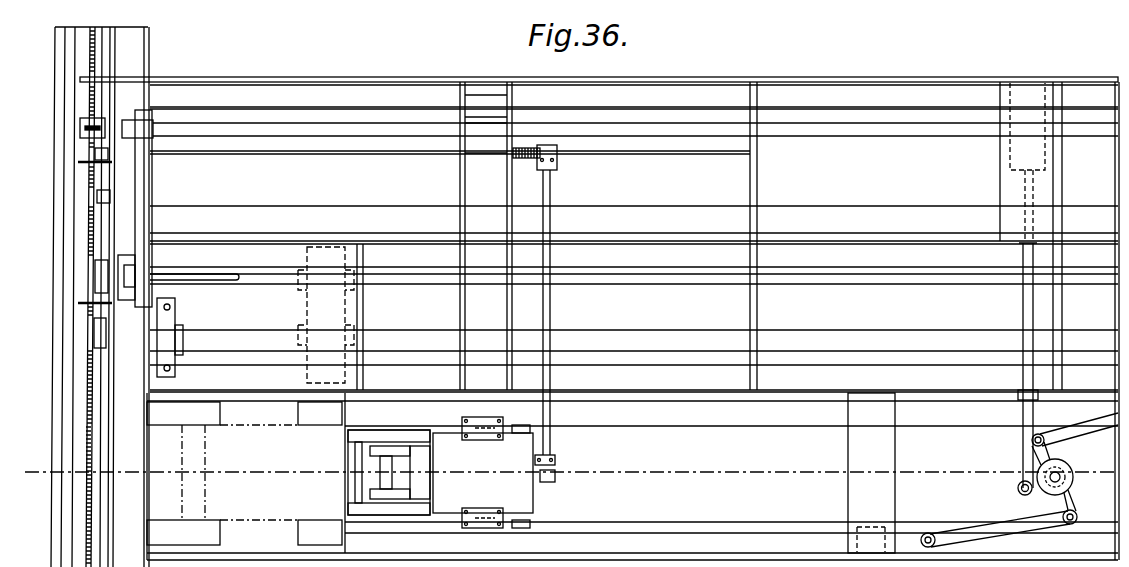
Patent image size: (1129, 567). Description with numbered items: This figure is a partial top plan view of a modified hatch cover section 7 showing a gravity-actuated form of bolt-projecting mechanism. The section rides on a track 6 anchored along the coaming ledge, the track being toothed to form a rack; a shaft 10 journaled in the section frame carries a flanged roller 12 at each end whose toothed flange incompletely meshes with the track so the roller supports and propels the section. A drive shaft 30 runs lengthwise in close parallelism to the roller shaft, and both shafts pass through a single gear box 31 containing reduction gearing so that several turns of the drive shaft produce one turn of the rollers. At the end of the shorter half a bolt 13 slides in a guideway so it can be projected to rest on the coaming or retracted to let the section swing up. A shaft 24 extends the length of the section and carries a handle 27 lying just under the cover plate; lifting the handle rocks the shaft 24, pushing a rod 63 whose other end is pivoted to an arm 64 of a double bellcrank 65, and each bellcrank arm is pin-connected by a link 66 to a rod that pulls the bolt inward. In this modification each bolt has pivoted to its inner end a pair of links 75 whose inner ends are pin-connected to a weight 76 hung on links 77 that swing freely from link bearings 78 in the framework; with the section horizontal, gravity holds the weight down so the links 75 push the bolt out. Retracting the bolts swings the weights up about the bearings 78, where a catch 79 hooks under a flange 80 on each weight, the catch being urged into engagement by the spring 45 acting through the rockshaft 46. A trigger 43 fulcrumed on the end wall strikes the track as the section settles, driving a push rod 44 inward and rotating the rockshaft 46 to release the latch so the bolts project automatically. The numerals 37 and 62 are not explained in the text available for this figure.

The track 6 is at (88, 378).
The hatch cover section 7 is at (727, 67).
The shaft 10 is at (838, 342).
The roller 12 is at (98, 334).
The bolt 13 is at (274, 497).
The shaft 24 is at (892, 130).
The handle 27 is at (142, 197).
The drive shaft 30 is at (930, 280).
The gear box 31 is at (318, 306).
The section line 37 is at (41, 484).
The trigger 43 is at (100, 152).
The push rod 44 is at (412, 152).
The spring 45 is at (525, 160).
The rockshaft 46 is at (546, 328).
The shaft 62 is at (657, 542).
The rod 63 is at (1027, 310).
The arm 64 is at (1048, 490).
The double bellcrank 65 is at (1075, 470).
The link 66 is at (1108, 425).
The links 75 is at (388, 443).
The weight 76 is at (480, 487).
The links 77 is at (508, 428).
The link bearings 78 is at (527, 522).
The catch 79 is at (552, 477).
The flange 80 is at (548, 483).